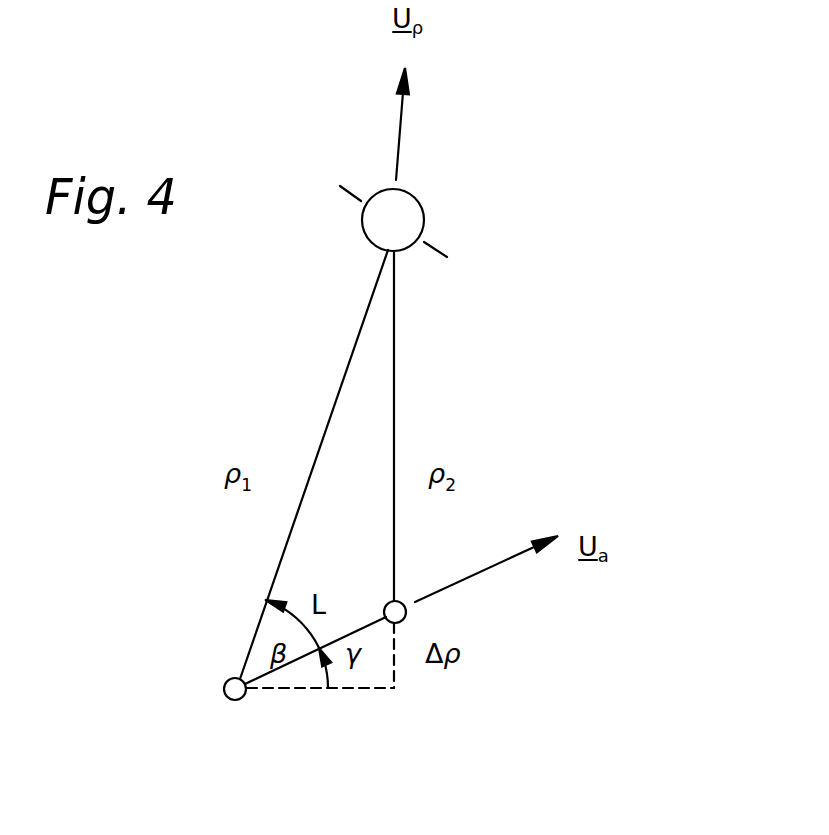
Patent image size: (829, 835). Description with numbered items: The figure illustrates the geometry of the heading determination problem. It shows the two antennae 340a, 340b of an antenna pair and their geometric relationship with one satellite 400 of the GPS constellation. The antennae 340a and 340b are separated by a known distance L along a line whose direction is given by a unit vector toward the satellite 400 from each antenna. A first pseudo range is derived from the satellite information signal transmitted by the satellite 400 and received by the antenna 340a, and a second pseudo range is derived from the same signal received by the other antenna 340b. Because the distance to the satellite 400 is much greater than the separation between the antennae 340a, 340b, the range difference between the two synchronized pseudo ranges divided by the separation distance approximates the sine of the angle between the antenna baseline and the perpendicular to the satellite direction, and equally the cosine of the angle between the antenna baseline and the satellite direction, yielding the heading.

The satellite 400 is at (427, 203).
The antenna 340a is at (235, 701).
The antenna 340b is at (414, 617).